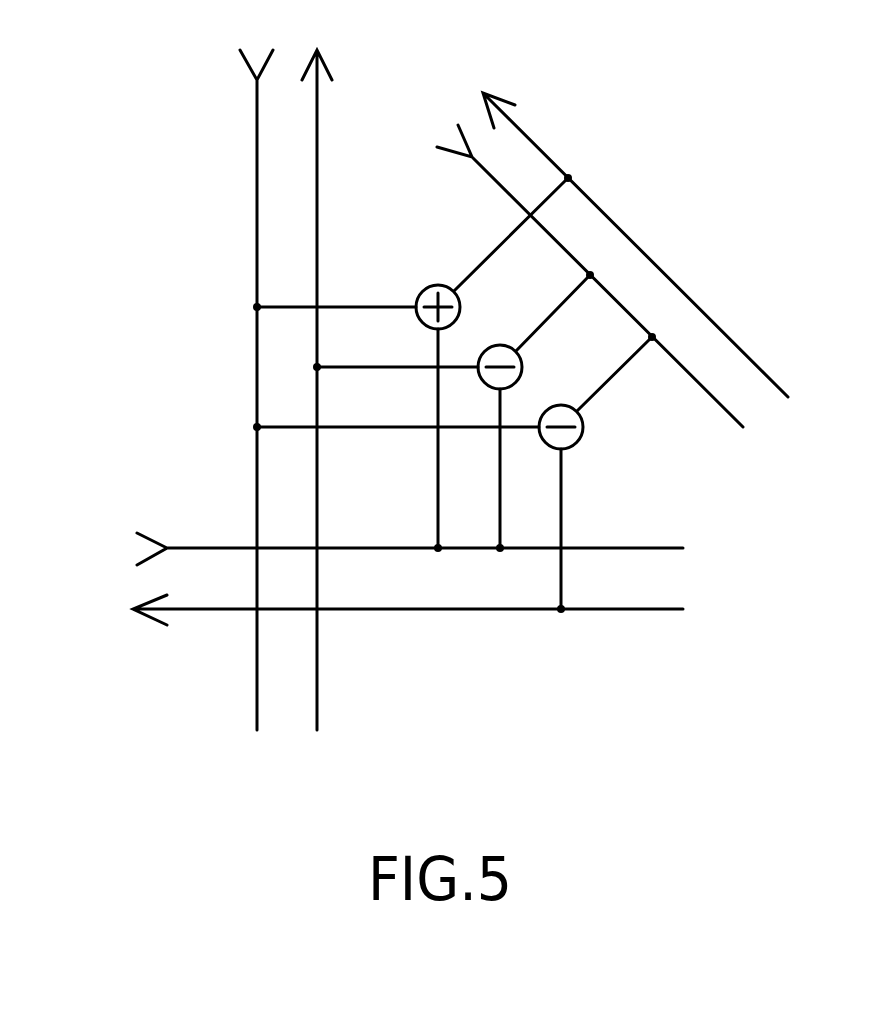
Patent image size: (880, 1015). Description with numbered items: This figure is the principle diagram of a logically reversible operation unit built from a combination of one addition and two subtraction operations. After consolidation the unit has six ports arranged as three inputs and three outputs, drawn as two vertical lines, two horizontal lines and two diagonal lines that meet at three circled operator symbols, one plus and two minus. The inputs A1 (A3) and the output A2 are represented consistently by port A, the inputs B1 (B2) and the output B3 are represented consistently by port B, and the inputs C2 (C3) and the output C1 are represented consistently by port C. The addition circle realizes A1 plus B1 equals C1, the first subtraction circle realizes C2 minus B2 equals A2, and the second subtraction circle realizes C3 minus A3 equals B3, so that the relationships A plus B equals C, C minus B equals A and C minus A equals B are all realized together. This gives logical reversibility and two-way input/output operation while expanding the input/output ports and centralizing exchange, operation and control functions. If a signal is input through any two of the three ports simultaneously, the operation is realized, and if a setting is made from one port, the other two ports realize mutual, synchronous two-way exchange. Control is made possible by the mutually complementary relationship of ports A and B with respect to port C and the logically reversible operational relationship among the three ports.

The input A1 is at (233, 368).
The input A3 is at (256, 390).
The output A2 is at (326, 368).
The output C1 is at (611, 229).
The input C2 is at (540, 264).
The input C3 is at (590, 276).
The input B1 is at (349, 549).
The input B2 is at (410, 549).
The output B3 is at (384, 609).